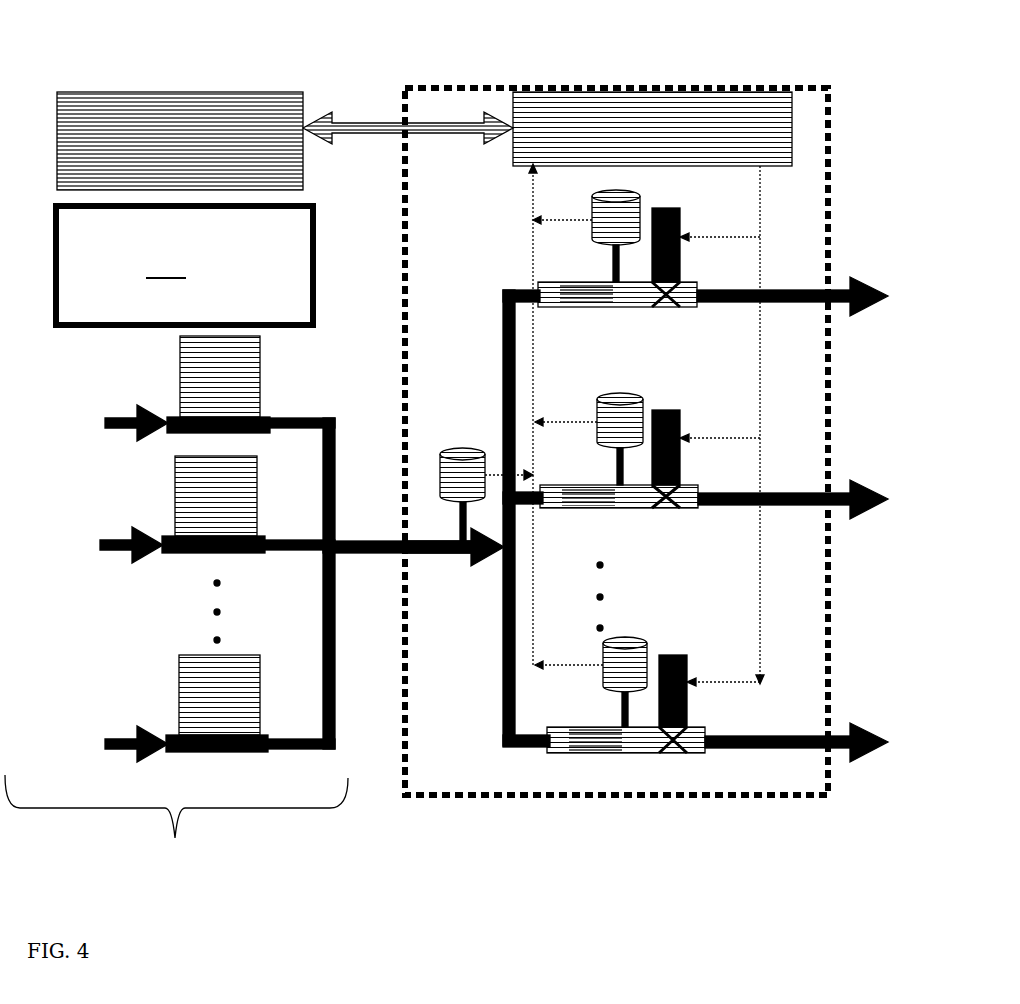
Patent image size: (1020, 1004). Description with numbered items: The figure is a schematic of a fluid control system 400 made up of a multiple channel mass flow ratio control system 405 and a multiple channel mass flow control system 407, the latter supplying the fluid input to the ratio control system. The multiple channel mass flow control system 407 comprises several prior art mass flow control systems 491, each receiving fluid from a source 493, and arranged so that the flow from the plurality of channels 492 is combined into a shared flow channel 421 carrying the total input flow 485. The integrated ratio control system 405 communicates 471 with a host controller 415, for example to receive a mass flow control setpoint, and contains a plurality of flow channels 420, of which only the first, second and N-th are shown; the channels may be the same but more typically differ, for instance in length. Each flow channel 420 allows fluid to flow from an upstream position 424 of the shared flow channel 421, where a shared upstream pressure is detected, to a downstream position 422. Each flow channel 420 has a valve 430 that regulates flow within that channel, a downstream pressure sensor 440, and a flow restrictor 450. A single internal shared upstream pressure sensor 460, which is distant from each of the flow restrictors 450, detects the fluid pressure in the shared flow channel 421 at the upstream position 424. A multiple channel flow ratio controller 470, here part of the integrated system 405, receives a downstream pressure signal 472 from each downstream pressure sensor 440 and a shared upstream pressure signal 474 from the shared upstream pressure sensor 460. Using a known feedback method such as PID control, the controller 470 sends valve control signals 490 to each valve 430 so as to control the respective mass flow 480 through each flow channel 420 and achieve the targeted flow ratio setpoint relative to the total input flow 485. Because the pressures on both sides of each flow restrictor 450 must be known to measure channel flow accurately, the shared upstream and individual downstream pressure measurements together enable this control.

The fluid control system 400 is at (464, 441).
The multiple channel mass flow ratio control system 405 is at (662, 84).
The multiple channel mass flow control system 407 is at (176, 606).
The host controller 415 is at (197, 91).
The flow channel 420 is at (550, 310).
The shared flow channel 421 is at (422, 558).
The downstream position 422 is at (840, 305).
The upstream position 424 is at (463, 553).
The valve 430 is at (680, 259).
The downstream pressure sensor 440 is at (612, 260).
The flow restrictor 450 is at (590, 307).
The shared upstream pressure sensor 460 is at (455, 446).
The multiple channel flow ratio (MCFR) controller 470 is at (792, 130).
The communication 471 is at (408, 136).
The downstream pressure signal 472 is at (566, 416).
The shared upstream pressure signal 474 is at (492, 468).
The mass flow 480 is at (887, 507).
The total input flow 485 is at (369, 578).
The valve control signal 490 is at (760, 205).
The mass flow control system 491 is at (260, 376).
The channel 492 is at (249, 594).
The source 493 is at (100, 554).